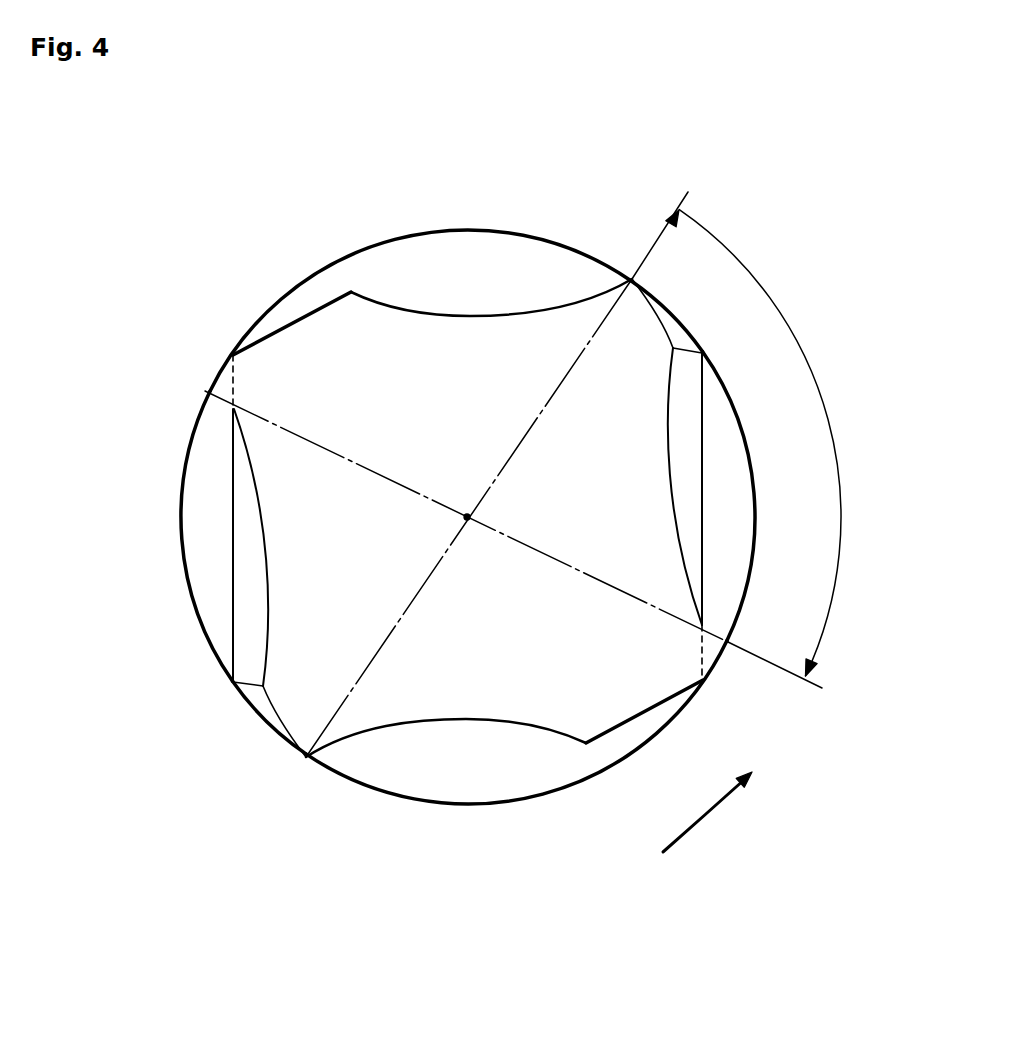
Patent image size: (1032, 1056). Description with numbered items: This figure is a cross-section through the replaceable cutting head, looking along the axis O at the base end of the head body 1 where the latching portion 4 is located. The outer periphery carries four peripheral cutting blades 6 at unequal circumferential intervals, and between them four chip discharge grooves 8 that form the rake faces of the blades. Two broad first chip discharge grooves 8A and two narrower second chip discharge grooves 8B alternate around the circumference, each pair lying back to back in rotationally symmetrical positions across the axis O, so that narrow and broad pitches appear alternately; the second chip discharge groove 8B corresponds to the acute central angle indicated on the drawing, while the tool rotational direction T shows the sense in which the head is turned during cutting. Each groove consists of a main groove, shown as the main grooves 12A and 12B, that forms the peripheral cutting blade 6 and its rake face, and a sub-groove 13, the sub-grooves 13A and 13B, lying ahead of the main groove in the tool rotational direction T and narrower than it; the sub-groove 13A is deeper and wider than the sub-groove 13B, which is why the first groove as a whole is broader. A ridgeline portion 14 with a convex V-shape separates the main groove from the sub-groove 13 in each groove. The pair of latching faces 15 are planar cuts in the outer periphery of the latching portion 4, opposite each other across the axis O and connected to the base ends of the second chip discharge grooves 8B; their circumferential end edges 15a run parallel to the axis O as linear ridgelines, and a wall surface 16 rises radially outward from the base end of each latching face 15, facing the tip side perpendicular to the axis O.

The head body 1 is at (805, 187).
The latching portion 4 is at (720, 192).
The peripheral cutting blade 6 is at (632, 276).
The chip discharge groove 8 is at (442, 538).
The first chip discharge groove 8A is at (468, 538).
The second chip discharge groove 8B is at (442, 517).
The main groove of first chip discharge groove 12A is at (468, 313).
The main groove of second chip discharge groove 12B is at (668, 465).
The sub-groove 13 is at (467, 524).
The sub-groove of first chip discharge groove 13A is at (290, 325).
The sub-groove of second chip discharge groove 13B is at (667, 328).
The ridgeline portion 14 is at (351, 292).
The latching face 15 is at (703, 537).
The end edge 15a is at (233, 355).
The wall surface 16 is at (733, 507).
The axis O is at (467, 517).
The tool rotational direction T is at (707, 814).